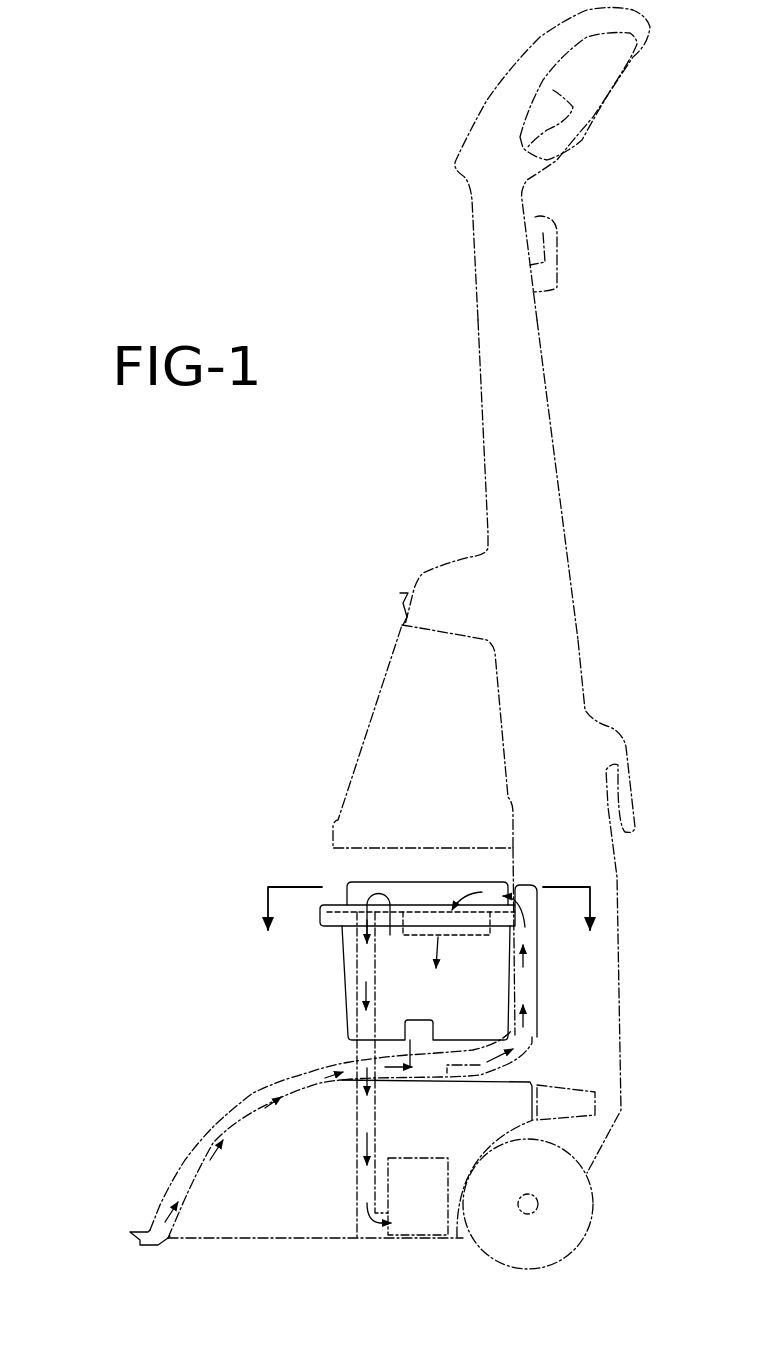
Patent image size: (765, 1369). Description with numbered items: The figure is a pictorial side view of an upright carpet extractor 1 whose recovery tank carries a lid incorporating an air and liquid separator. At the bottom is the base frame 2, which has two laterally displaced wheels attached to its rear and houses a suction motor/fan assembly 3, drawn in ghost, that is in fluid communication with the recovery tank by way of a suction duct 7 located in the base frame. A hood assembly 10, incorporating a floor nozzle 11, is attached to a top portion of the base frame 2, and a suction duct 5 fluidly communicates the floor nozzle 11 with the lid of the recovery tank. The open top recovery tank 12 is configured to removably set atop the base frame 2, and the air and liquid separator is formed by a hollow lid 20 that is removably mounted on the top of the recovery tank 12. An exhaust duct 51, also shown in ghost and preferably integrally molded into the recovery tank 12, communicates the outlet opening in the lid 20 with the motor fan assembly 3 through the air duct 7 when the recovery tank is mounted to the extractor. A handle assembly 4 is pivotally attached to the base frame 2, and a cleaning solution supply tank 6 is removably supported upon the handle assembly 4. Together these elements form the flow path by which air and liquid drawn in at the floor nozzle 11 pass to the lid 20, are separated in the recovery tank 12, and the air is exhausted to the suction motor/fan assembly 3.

The upright carpet extractor 1 is at (216, 611).
The base frame 2 is at (300, 1285).
The suction motor/fan assembly 3 is at (415, 1223).
The handle assembly 4 is at (560, 431).
The suction duct 5 is at (523, 988).
The cleaning solution supply tank 6 is at (357, 762).
The suction duct 7 is at (367, 1185).
The hood assembly 10 is at (210, 1195).
The floor nozzle 11 is at (137, 1243).
The recovery tank 12 is at (350, 1023).
The lid 20 is at (397, 877).
The exhaust duct 51 is at (358, 988).